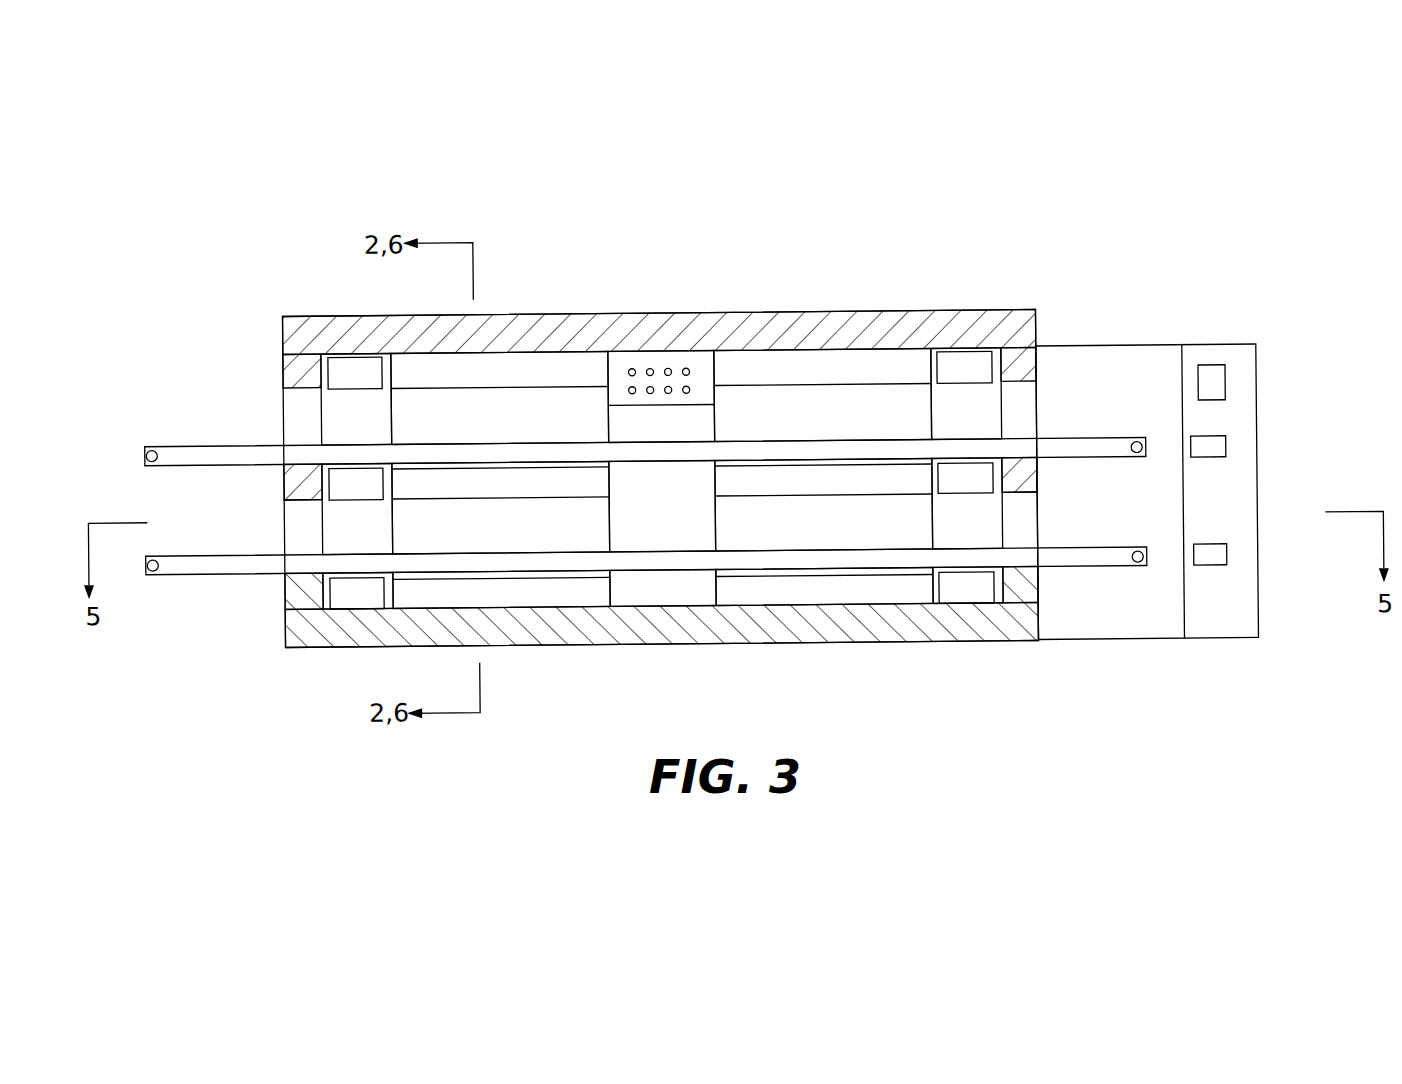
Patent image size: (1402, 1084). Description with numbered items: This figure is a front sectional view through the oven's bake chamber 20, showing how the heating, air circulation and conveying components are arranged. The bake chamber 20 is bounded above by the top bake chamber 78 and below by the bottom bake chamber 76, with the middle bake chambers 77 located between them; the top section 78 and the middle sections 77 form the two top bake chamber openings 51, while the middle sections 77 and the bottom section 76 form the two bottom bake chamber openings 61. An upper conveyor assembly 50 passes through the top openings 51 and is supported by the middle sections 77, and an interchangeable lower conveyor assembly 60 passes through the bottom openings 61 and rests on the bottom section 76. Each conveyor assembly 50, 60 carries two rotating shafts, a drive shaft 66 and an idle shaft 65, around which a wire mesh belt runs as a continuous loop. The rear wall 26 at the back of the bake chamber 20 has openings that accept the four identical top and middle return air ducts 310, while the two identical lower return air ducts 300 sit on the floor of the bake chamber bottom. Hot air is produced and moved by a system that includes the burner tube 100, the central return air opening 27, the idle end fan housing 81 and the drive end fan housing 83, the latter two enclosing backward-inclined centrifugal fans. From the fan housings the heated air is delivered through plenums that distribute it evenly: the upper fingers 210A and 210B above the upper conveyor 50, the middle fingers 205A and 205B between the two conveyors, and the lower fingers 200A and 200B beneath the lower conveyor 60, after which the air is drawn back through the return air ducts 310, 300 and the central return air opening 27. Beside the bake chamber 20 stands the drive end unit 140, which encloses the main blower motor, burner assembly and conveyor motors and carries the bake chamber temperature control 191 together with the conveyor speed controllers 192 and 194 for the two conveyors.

The bake chamber 20 is at (778, 296).
The top bake chamber 78 is at (697, 312).
The bottom bake chamber 76 is at (712, 645).
The top bake chamber openings 51 is at (291, 432).
The bottom bake chamber openings 61 is at (291, 542).
The middle bake chambers 77 is at (284, 484).
The rear wall 26 is at (343, 429).
The top and middle return air ducts 310 is at (359, 367).
The lower return air ducts 300 is at (362, 591).
The idle end fan housing 81 is at (482, 429).
The drive end fan housing 83 is at (813, 428).
The central return air opening 27 is at (649, 437).
The burner tube 100 is at (621, 363).
The upper finger 210A is at (503, 373).
The upper finger 210B is at (842, 372).
The lower finger 200A is at (518, 588).
The lower finger 200B is at (814, 590).
The middle finger 205A is at (523, 478).
The middle finger 205B is at (782, 479).
The upper conveyor assembly 50 is at (242, 428).
The lower conveyor assembly 60 is at (231, 585).
The idle shaft 65 is at (151, 446).
The drive shaft 66 is at (1137, 568).
The drive end unit 140 is at (1088, 332).
The bake chamber temperature control 191 is at (1226, 385).
The conveyor speed controller 192 is at (1226, 452).
The conveyor speed controller 194 is at (1226, 559).